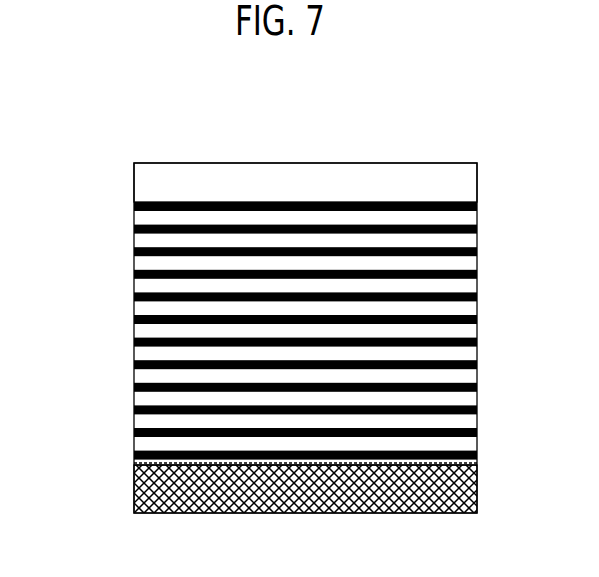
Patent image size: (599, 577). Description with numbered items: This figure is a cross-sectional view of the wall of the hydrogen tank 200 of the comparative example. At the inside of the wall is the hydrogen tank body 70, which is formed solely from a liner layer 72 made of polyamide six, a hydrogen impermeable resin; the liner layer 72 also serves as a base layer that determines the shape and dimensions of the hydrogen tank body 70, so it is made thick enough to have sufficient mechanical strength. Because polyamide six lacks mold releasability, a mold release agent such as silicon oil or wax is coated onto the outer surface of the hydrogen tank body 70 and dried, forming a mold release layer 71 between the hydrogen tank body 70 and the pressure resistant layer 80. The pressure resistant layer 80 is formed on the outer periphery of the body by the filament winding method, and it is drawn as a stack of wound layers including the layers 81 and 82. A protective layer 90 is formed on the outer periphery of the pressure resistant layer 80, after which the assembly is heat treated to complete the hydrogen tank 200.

The hydrogen tank 200 is at (488, 119).
The protective layer 90 is at (477, 181).
The pressure resistant layer 80 is at (290, 331).
The first layer 81 is at (134, 223).
The second layer 82 is at (134, 318).
The mold release layer 71 is at (134, 463).
The liner layer 72 is at (477, 490).
The hydrogen tank body 70 is at (328, 514).